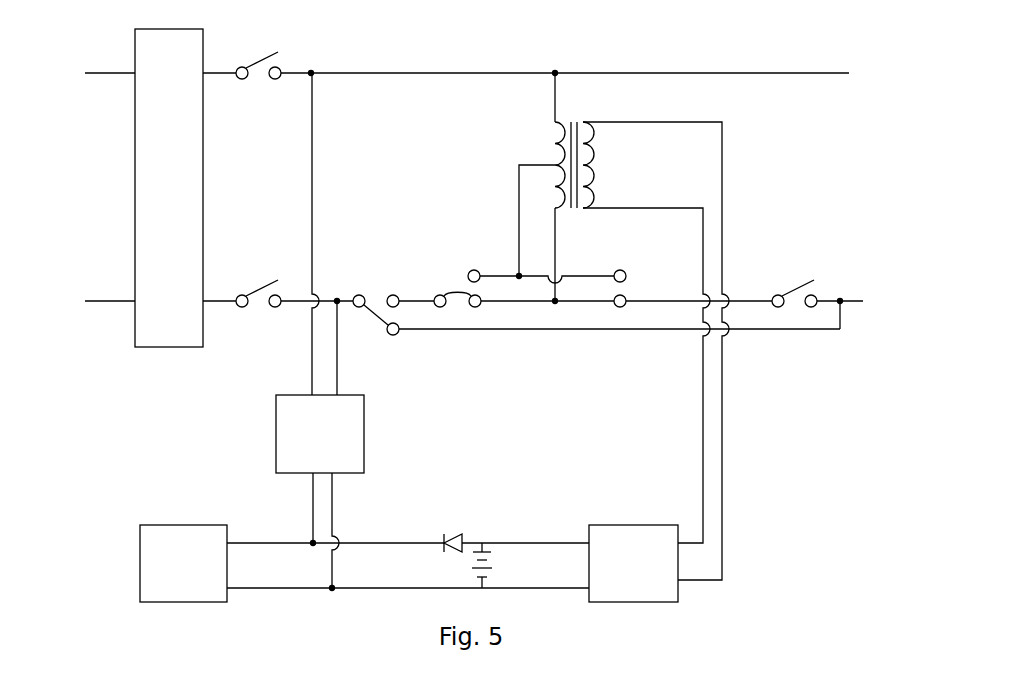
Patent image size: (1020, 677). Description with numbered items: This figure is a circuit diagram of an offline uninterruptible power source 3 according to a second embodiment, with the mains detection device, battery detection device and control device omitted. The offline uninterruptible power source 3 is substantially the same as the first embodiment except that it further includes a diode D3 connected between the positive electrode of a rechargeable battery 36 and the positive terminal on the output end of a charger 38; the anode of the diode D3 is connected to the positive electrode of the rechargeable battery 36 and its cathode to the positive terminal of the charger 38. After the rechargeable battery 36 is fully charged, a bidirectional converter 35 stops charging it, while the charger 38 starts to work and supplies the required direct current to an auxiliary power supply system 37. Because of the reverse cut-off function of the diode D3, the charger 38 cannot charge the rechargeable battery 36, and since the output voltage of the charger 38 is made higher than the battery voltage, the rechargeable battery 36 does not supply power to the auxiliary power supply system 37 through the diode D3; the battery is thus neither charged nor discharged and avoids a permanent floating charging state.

The offline uninterruptible power source 3 is at (474, 315).
The bidirectional converter 35 is at (633, 525).
The rechargeable battery 36 is at (496, 571).
The auxiliary power supply system 37 is at (184, 525).
The charger 38 is at (364, 433).
The diode D3 is at (452, 532).